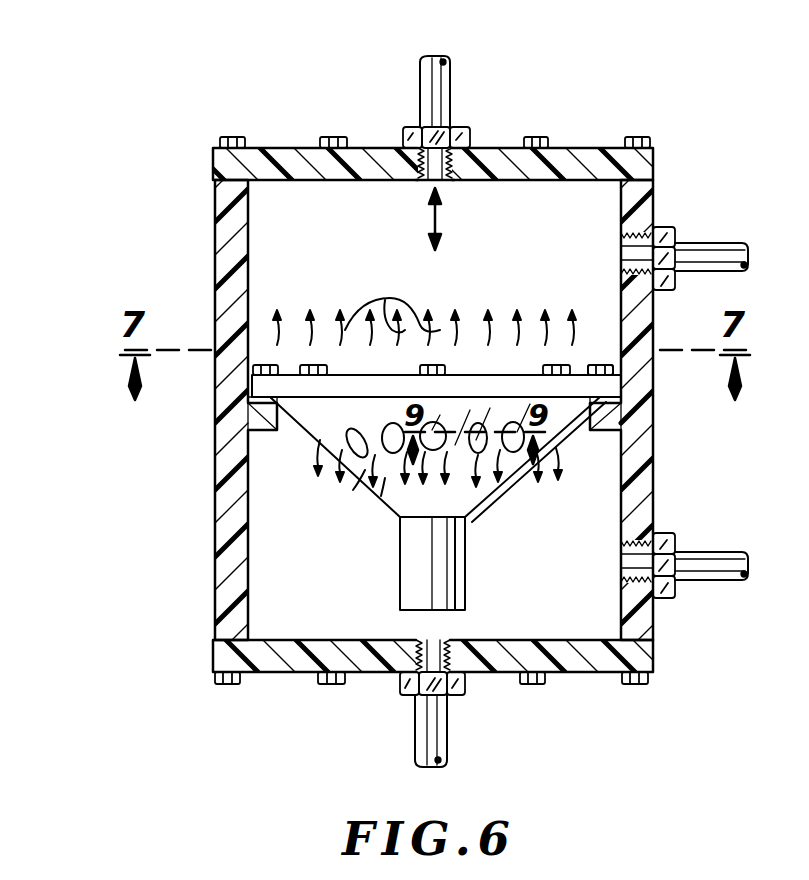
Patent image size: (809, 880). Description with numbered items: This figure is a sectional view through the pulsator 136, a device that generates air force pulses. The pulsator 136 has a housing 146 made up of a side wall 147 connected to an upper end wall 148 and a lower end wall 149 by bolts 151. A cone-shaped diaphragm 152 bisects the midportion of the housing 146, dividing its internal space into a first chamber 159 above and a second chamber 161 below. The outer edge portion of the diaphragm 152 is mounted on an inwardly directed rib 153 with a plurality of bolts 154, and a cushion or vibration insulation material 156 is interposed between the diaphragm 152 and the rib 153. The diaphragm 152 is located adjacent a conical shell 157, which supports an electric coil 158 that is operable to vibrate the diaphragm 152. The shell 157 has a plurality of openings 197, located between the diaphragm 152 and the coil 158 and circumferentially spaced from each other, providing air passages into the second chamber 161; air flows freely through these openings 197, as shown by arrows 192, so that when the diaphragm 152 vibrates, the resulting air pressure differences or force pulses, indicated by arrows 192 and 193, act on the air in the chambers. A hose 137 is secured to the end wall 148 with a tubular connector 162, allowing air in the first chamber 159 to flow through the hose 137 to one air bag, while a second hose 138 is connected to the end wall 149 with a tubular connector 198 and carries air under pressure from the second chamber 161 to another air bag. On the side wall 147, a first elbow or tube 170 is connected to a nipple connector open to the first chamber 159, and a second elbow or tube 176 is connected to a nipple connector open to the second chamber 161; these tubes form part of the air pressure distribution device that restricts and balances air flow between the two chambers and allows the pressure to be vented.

The pulsator 136 is at (672, 200).
The hose 137 is at (420, 83).
The second hose 138 is at (430, 752).
The housing 146 is at (206, 555).
The side wall 147 is at (218, 207).
The end wall 148 is at (583, 156).
The end wall 149 is at (278, 667).
The bolts 151 is at (640, 136).
The cone-shaped diaphragm 152 is at (602, 388).
The inwardly directed rib 153 is at (598, 432).
The bolts 154 is at (600, 364).
The cushion or vibration insulation material 156 is at (280, 424).
The conical shell 157 is at (499, 466).
The electric coil 158 is at (441, 565).
The first chamber 159 is at (556, 233).
The second chamber 161 is at (332, 587).
The tubular connector 162 is at (457, 134).
The first elbow or tube 170 is at (691, 244).
The second elbow or tube 176 is at (720, 552).
The arrows 192 is at (438, 468).
The arrows 193 is at (424, 306).
The openings 197 is at (376, 474).
The tubular connector 198 is at (404, 680).